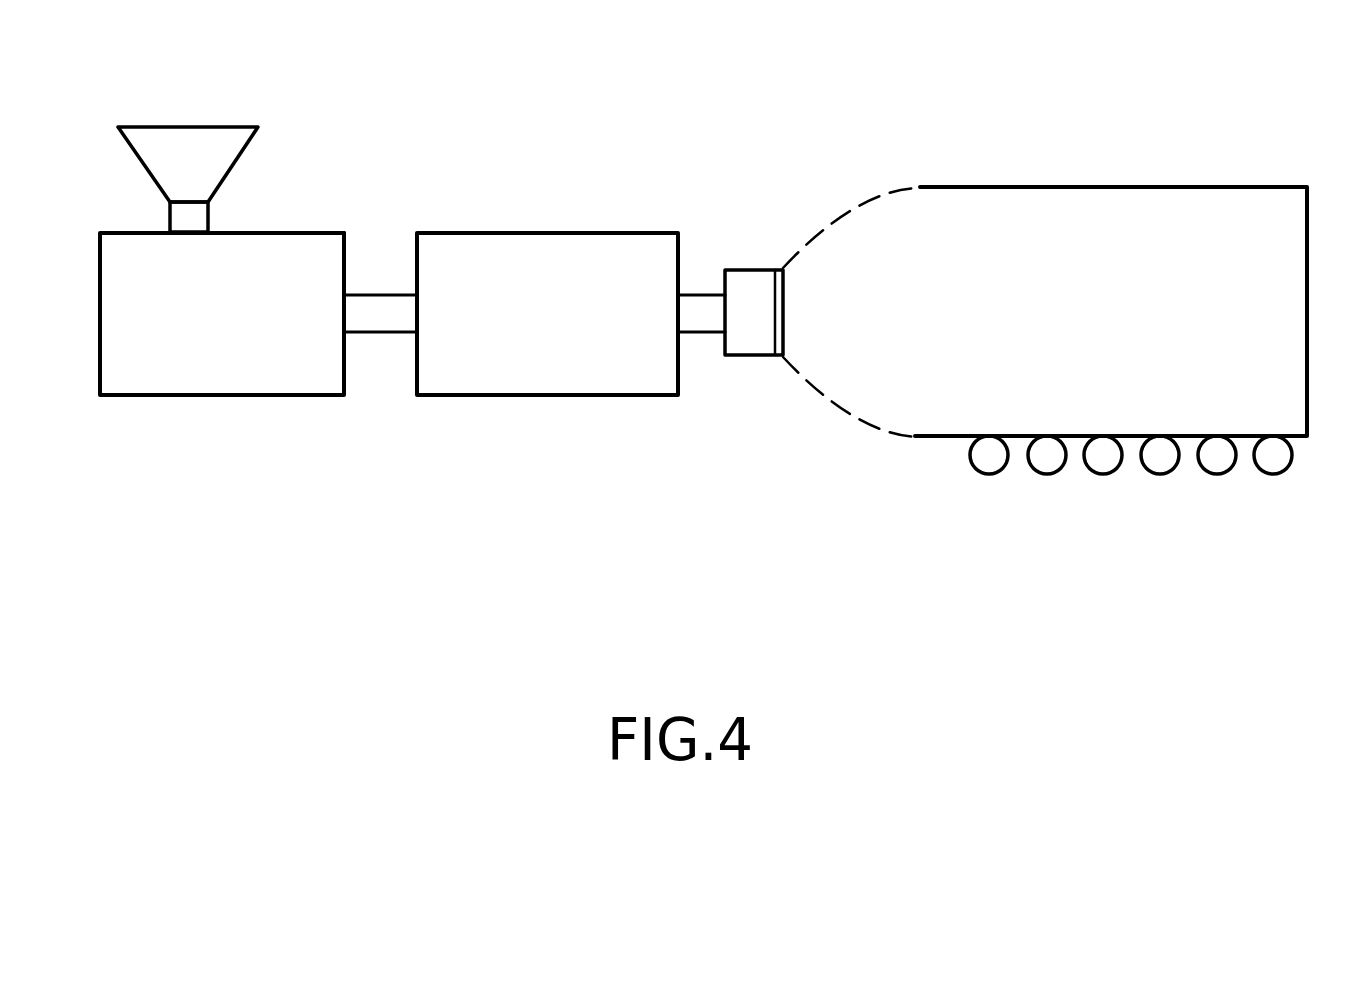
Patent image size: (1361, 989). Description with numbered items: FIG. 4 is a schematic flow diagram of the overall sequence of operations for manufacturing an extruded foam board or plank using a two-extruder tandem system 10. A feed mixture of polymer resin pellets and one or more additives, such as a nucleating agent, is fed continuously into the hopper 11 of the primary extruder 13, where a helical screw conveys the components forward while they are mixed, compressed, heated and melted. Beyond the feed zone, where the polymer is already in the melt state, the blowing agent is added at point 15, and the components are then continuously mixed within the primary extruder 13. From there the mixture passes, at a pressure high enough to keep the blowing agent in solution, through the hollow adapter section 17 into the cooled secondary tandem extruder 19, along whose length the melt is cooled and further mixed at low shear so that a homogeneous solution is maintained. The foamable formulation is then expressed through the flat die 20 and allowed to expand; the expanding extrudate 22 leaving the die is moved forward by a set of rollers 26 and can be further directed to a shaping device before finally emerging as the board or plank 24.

The two-extruder tandem system 10 is at (676, 488).
The hopper 11 is at (200, 127).
The primary extruder 13 is at (218, 398).
The blowing agent injection point 15 is at (300, 232).
The hollow adapter section 17 is at (378, 294).
The cooled secondary tandem extruder 19 is at (545, 397).
The flat die 20 is at (752, 270).
The expanding extrudate 22 is at (845, 425).
The board or plank 24 is at (1095, 185).
The set of rollers 26 is at (1152, 480).